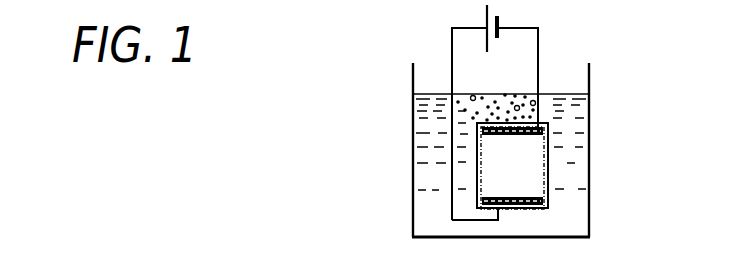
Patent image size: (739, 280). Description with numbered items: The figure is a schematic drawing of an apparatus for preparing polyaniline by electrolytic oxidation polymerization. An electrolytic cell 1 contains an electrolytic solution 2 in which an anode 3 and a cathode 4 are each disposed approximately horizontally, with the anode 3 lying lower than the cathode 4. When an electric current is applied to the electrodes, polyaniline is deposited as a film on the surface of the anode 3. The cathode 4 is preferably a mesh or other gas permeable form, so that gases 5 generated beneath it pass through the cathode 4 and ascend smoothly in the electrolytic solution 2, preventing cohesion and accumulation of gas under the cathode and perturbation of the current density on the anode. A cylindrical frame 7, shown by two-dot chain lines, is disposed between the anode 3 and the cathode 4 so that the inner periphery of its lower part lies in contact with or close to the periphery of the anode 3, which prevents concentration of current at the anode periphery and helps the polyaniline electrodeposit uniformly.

The electrolytic cell 1 is at (413, 133).
The electrolytic solution 2 is at (568, 227).
The anode 3 is at (528, 196).
The cathode 4 is at (528, 136).
The gases 5 is at (514, 96).
The cylindrical frame 7 is at (478, 175).